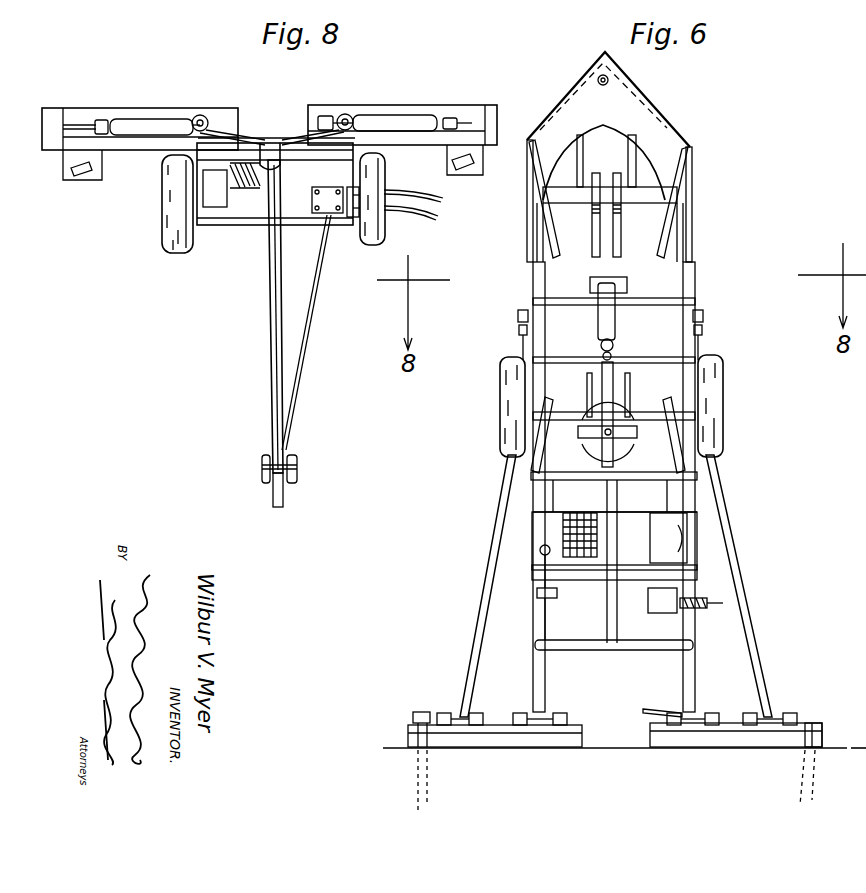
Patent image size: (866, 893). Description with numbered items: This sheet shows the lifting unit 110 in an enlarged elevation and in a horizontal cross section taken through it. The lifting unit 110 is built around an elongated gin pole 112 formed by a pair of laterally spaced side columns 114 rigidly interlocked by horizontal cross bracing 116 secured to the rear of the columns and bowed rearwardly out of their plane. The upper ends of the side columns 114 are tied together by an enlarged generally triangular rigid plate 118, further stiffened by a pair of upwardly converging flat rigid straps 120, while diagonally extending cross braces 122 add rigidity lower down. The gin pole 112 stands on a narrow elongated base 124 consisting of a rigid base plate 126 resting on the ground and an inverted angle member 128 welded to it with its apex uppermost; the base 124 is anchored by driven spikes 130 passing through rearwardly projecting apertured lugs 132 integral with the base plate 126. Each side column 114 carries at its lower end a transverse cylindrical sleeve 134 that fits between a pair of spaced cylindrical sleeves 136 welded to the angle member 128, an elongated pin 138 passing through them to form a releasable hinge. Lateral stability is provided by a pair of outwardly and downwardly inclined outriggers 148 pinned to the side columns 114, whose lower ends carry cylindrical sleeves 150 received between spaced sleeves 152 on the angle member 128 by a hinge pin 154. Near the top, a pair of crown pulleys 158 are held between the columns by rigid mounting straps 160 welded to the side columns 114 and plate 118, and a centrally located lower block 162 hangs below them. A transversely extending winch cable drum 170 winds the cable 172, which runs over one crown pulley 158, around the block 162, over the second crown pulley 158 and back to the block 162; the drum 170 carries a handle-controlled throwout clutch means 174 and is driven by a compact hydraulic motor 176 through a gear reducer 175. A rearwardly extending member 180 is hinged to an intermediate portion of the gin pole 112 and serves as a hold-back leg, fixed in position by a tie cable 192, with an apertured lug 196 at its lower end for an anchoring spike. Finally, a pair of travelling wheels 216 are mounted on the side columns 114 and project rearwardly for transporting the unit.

In FIG. 6, the lifting unit 110 is at (752, 448).
In FIG. 6, the gin pole 112 is at (711, 231).
In FIG. 6, the side columns 114 is at (698, 320).
In FIG. 8, the horizontal cross bracing 116 is at (249, 137).
In FIG. 6, the horizontal cross bracing 116 is at (553, 356).
In FIG. 6, the triangular rigid plate 118 is at (672, 134).
In FIG. 6, the flat rigid straps 120 is at (567, 107).
In FIG. 6, the diagonal cross braces 122 is at (555, 246).
In FIG. 8, the base 124 is at (337, 99).
In FIG. 6, the base 124 is at (426, 700).
In FIG. 6, the base plate 126 is at (477, 748).
In FIG. 8, the inverted angle member 128 is at (472, 108).
In FIG. 6, the inverted angle member 128 is at (567, 730).
In FIG. 8, the driven spikes 130 is at (71, 178).
In FIG. 6, the driven spikes 130 is at (823, 722).
In FIG. 6, the apertured lugs 132 is at (543, 750).
In FIG. 6, the cylindrical sleeve 134 is at (696, 712).
In FIG. 6, the spaced cylindrical sleeves 136 is at (704, 716).
In FIG. 6, the elongated pin 138 is at (663, 711).
In FIG. 8, the outriggers 148 is at (142, 122).
In FIG. 6, the outriggers 148 is at (485, 558).
In FIG. 6, the cylindrical sleeves 150 is at (769, 711).
In FIG. 6, the spaced cylindrical sleeves 152 is at (781, 710).
In FIG. 6, the hinge pin 154 is at (792, 712).
In FIG. 6, the crown pulleys 158 is at (615, 174).
In FIG. 6, the mounting straps 160 is at (546, 193).
In FIG. 6, the lower block 162 is at (650, 434).
In FIG. 8, the winch cable drum 170 is at (300, 175).
In FIG. 6, the winch cable drum 170 is at (633, 528).
In FIG. 6, the cable 172 is at (628, 377).
In FIG. 6, the throwout clutch means 174 is at (547, 527).
In FIG. 6, the gear reducer 175 is at (662, 543).
In FIG. 6, the hydraulic motor 176 is at (662, 595).
In FIG. 8, the rearwardly extending member 180 is at (257, 305).
In FIG. 8, the tie cable 192 is at (308, 311).
In FIG. 6, the apertured lug 196 is at (858, 748).
In FIG. 8, the travelling wheels 216 is at (163, 223).
In FIG. 6, the travelling wheels 216 is at (722, 389).